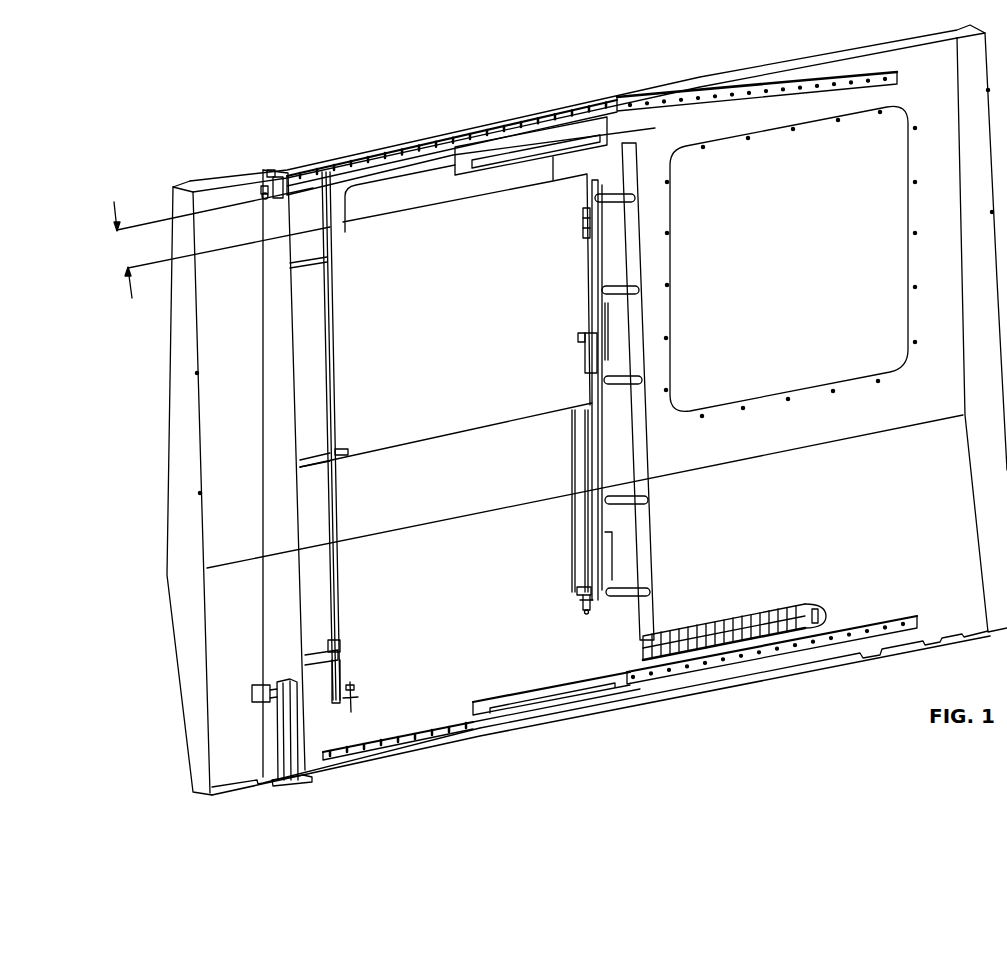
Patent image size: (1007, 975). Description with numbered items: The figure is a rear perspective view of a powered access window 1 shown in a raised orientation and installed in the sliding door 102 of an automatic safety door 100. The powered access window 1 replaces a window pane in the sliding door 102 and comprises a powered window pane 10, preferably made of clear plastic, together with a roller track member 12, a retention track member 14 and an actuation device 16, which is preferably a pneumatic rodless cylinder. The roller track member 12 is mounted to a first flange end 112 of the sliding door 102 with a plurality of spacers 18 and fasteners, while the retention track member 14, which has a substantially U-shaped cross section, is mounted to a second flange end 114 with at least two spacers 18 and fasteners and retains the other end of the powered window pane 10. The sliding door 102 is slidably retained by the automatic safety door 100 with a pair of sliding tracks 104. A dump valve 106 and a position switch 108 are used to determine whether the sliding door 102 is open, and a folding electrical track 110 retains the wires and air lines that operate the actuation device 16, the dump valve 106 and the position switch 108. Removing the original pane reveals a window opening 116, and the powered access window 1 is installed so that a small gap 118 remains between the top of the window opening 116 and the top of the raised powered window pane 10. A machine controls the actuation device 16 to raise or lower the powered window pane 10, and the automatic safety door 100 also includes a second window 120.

The powered access window 1 is at (446, 589).
The powered window pane 10 is at (457, 200).
The roller track member 12 is at (607, 590).
The retention track member 14 is at (340, 630).
The actuation device 16 is at (573, 568).
The spacers 18 is at (613, 197).
The automatic safety door 100 is at (891, 768).
The sliding door 102 is at (333, 202).
The sliding tracks 104 is at (722, 100).
The dump valve 106 is at (293, 765).
The position switch 108 is at (263, 213).
The folding electrical track 110 is at (690, 665).
The first flange end 112 is at (618, 135).
The second flange end 114 is at (272, 218).
The window opening 116 is at (407, 192).
The small gap 118 is at (215, 243).
The second window 120 is at (828, 135).